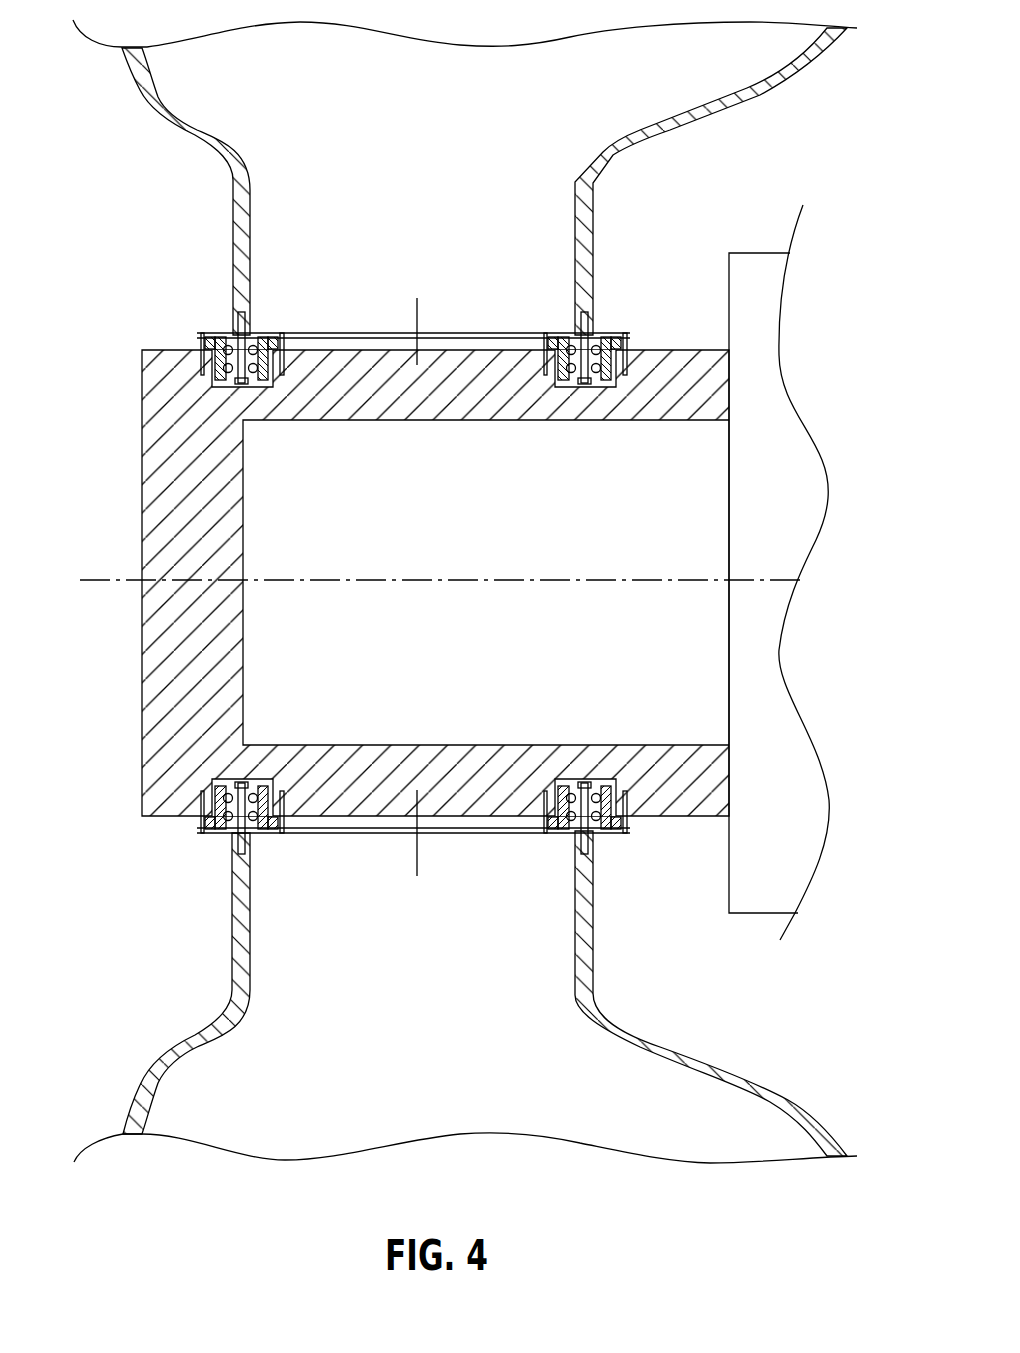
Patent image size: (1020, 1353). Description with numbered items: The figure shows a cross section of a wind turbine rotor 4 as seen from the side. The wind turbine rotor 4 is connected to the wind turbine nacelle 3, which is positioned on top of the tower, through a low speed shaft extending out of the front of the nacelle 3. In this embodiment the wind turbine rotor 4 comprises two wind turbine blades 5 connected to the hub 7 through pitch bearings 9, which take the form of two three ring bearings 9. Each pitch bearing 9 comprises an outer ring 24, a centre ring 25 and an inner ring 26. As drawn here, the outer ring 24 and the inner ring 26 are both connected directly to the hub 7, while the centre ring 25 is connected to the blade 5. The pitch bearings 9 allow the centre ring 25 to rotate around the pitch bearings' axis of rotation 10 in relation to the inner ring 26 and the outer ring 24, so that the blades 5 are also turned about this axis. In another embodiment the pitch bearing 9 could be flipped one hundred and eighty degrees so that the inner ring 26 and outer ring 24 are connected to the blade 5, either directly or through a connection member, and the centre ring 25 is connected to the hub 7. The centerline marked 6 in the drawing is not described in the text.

The wind turbine nacelle 3 is at (755, 284).
The wind turbine rotor 4 is at (110, 320).
The wind turbine blade 5 is at (247, 208).
The axis of rotation 6 is at (90, 597).
The hub 7 is at (150, 775).
The pitch bearing 9 is at (603, 333).
The axis of rotation 10 is at (417, 312).
The outer ring 24 is at (217, 830).
The centre ring 25 is at (234, 833).
The inner ring 26 is at (278, 833).